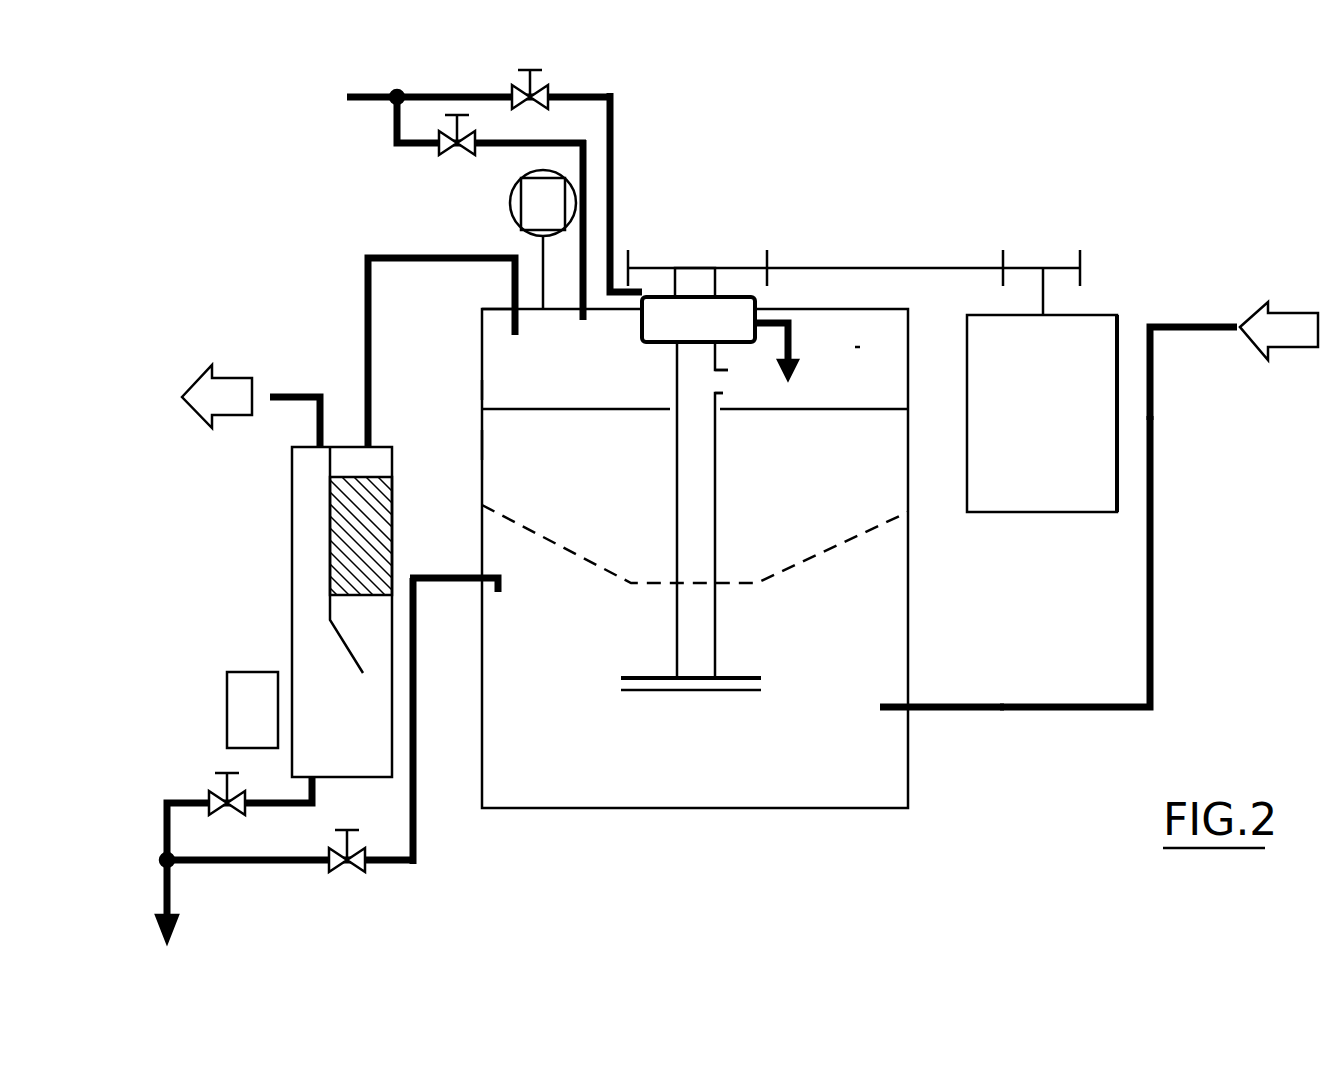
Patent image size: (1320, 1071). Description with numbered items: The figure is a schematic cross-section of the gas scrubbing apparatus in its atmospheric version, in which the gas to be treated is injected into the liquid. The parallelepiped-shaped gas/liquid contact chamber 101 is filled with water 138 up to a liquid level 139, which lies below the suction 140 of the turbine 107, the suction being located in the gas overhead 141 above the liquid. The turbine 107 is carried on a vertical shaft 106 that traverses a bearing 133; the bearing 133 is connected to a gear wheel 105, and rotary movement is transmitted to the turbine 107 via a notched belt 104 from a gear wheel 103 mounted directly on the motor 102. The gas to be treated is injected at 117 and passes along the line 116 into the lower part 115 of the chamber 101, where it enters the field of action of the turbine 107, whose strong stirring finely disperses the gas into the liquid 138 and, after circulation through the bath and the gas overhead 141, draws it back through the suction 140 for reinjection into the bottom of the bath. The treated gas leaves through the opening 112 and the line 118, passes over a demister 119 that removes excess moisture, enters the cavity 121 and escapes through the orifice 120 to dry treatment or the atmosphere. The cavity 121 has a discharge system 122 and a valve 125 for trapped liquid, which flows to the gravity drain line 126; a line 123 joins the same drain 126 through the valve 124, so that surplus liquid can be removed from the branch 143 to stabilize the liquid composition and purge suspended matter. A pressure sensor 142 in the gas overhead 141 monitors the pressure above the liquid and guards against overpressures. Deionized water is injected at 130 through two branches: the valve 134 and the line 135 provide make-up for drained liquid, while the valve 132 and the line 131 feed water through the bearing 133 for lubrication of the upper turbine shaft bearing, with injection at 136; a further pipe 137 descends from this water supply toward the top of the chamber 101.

The gas/liquid contact chamber 101 is at (810, 308).
The motor 102 is at (1093, 338).
The gear wheel 103 is at (1047, 291).
The notched belt 104 is at (867, 268).
The gear wheel 105 is at (692, 268).
The vertical shaft of the turbine 106 is at (674, 450).
The turbine 107 is at (638, 676).
The opening 112 is at (507, 320).
The lower part of the chamber 115 is at (882, 710).
The line 116 is at (1153, 590).
The gas injection point 117 is at (1223, 333).
The line 118 is at (362, 285).
The demister 119 is at (372, 500).
The orifice 120 is at (293, 396).
The cavity 121 is at (307, 648).
The discharge system 122 is at (260, 812).
The line 123 is at (417, 812).
The valve 124 is at (357, 878).
The valve 125 is at (212, 793).
The gravity drain line 126 is at (172, 887).
The deionized water injection point 130 is at (362, 97).
The line 131 is at (608, 183).
The valve 132 is at (552, 93).
The bearing 133 is at (655, 343).
The valve 134 is at (442, 156).
The line 135 is at (567, 140).
The injection point 136 is at (793, 372).
The pipe 137 is at (580, 320).
The water 138 is at (510, 448).
The liquid level 139 is at (510, 390).
The suction of the turbine 140 is at (717, 380).
The gas overhead 141 is at (855, 347).
The pressure sensor 142 is at (528, 182).
The branch 143 is at (498, 592).